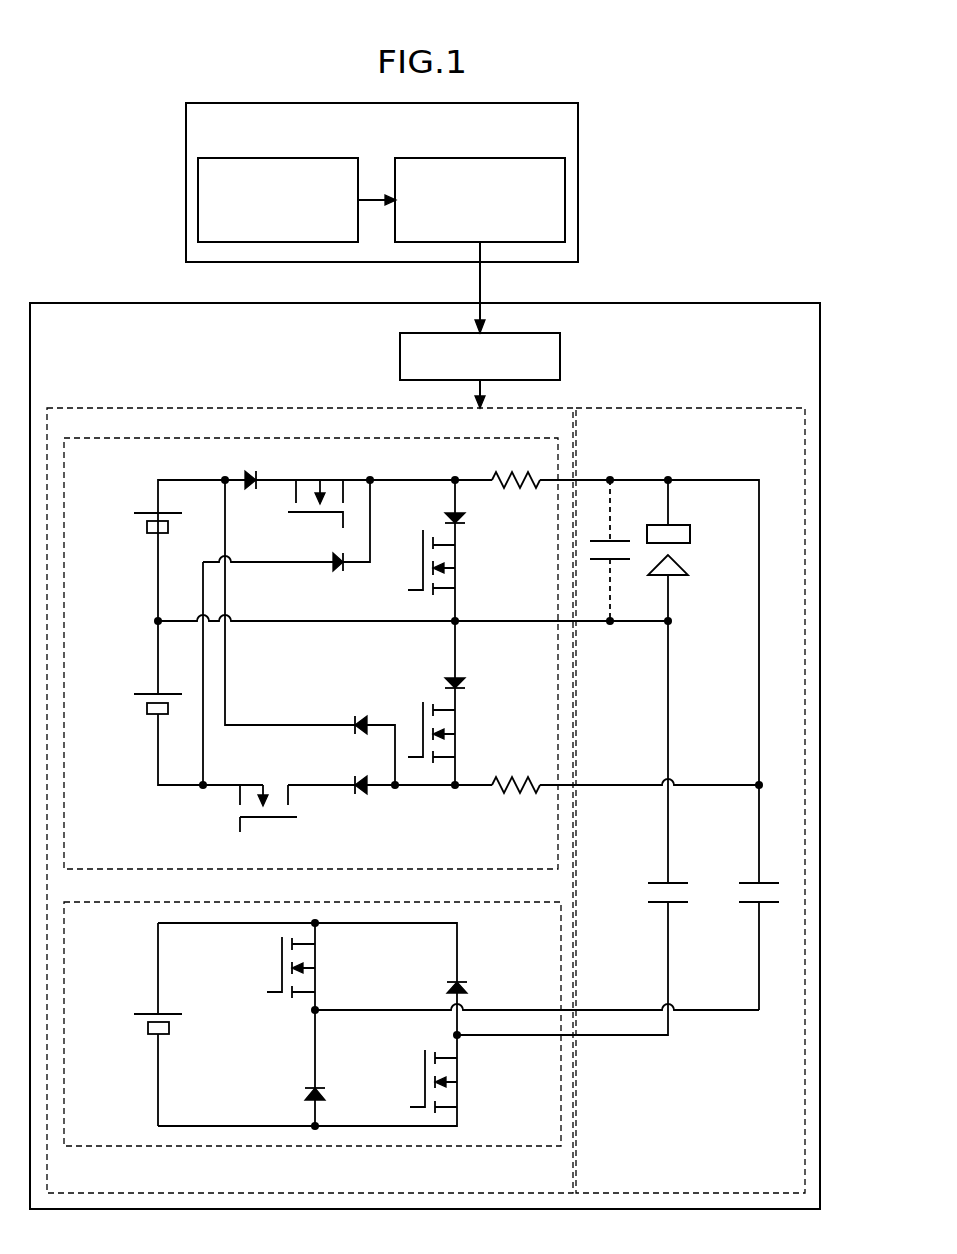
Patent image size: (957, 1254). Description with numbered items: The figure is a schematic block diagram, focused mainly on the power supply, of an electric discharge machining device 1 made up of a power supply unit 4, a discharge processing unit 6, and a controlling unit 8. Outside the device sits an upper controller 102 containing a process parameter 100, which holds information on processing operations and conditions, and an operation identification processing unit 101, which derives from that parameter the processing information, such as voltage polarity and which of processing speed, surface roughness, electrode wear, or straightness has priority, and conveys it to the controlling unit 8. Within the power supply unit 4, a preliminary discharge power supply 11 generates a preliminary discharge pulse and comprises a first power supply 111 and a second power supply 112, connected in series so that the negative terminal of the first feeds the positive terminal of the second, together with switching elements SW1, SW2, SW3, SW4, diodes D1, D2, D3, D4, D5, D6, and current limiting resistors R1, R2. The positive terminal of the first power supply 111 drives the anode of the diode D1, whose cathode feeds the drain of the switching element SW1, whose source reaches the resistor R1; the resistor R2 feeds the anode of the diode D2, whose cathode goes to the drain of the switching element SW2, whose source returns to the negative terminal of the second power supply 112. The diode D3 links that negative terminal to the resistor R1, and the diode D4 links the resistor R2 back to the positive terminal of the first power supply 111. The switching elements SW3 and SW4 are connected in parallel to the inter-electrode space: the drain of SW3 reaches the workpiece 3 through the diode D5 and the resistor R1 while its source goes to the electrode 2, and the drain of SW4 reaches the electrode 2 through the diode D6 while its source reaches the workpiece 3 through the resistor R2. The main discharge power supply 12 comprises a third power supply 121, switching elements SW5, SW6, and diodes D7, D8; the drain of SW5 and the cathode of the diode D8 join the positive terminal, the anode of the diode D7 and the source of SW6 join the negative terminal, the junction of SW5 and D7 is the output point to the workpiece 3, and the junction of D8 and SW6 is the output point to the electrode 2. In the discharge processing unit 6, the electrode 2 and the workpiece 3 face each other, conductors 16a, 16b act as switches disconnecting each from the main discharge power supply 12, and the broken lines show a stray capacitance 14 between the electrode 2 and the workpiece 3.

The electric discharge machining device 1 is at (784, 303).
The electrode 2 is at (686, 578).
The workpiece 3 is at (680, 525).
The power supply unit 4 is at (80, 408).
The discharge processing unit 6 is at (767, 408).
The controlling unit 8 is at (505, 333).
The preliminary discharge power supply 11 is at (517, 438).
The main discharge power supply 12 is at (517, 902).
The stray capacitance 14 is at (616, 541).
The conductor 16a is at (677, 883).
The conductor 16b is at (750, 883).
The process parameter 100 is at (305, 158).
The operation identification processing unit 101 is at (512, 158).
The upper controller 102 is at (517, 103).
The first power supply 111 is at (152, 536).
The second power supply 112 is at (152, 717).
The third power supply 121 is at (152, 1037).
The switching element SW1 is at (298, 513).
The switching element SW2 is at (277, 818).
The switching element SW3 is at (423, 536).
The switching element SW4 is at (423, 702).
The switching element SW5 is at (281, 938).
The switching element SW6 is at (425, 1052).
The diode D1 is at (243, 476).
The diode D2 is at (354, 778).
The diode D3 is at (331, 571).
The diode D4 is at (354, 714).
The diode D5 is at (465, 526).
The diode D6 is at (465, 690).
The diode D7 is at (304, 1088).
The diode D8 is at (447, 982).
The current limiting resistor R1 is at (518, 490).
The current limiting resistor R2 is at (518, 795).